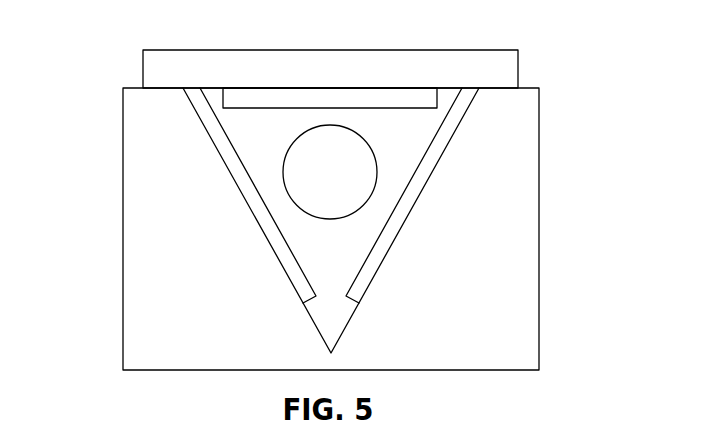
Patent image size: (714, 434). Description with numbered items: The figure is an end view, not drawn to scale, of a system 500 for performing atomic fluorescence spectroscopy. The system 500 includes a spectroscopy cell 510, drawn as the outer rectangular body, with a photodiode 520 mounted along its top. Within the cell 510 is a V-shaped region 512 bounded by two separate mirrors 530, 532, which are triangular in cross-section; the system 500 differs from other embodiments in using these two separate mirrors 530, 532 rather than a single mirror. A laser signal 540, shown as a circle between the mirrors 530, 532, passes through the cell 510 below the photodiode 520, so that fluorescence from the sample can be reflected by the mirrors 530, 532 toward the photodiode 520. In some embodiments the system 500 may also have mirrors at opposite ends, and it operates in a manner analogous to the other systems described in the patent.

The system 500 is at (309, 37).
The spectroscopy cell 510 is at (204, 328).
The triangular cavity 512 is at (310, 258).
The photodiode 520 is at (251, 108).
The mirror 530 is at (370, 283).
The mirror 532 is at (273, 253).
The laser signal 540 is at (311, 181).